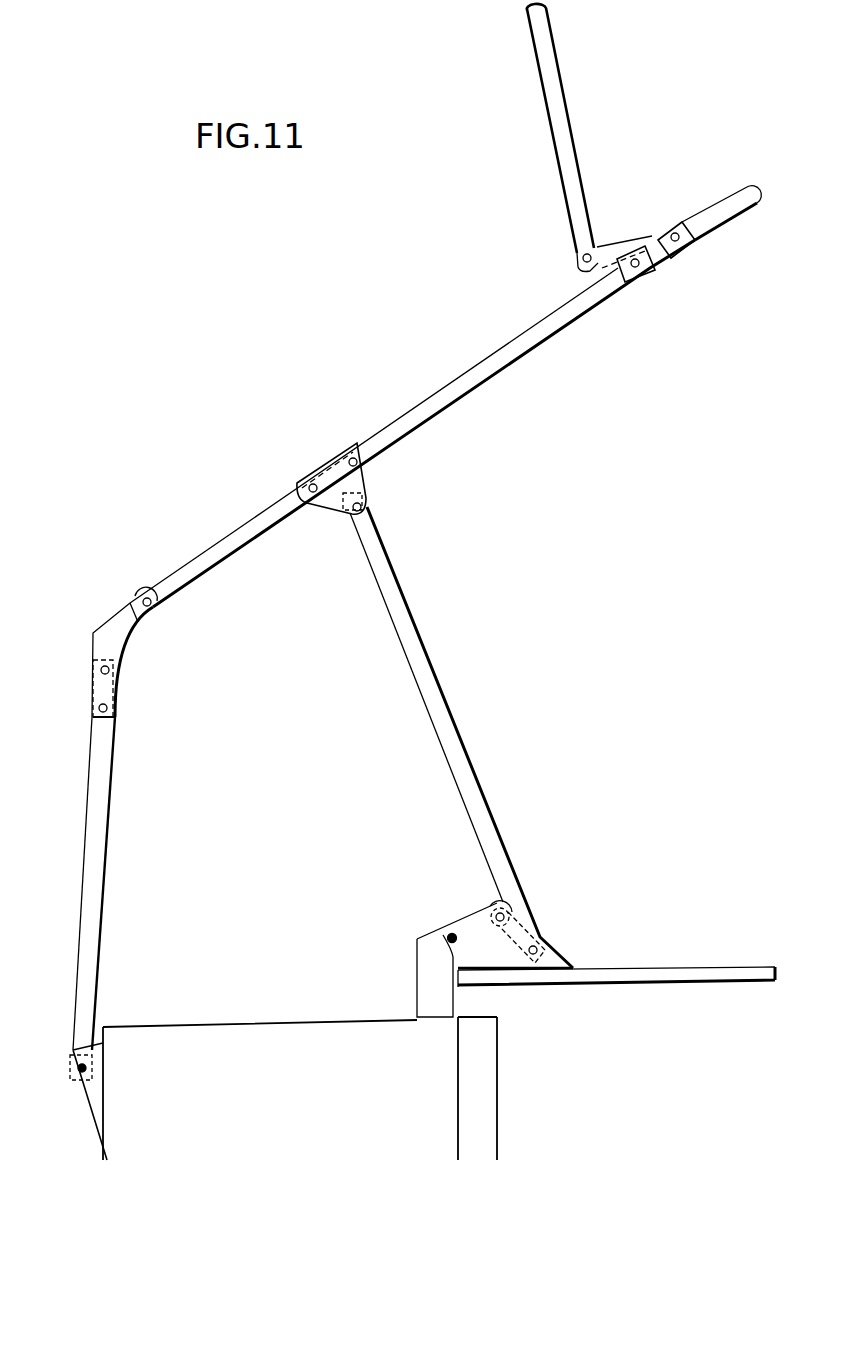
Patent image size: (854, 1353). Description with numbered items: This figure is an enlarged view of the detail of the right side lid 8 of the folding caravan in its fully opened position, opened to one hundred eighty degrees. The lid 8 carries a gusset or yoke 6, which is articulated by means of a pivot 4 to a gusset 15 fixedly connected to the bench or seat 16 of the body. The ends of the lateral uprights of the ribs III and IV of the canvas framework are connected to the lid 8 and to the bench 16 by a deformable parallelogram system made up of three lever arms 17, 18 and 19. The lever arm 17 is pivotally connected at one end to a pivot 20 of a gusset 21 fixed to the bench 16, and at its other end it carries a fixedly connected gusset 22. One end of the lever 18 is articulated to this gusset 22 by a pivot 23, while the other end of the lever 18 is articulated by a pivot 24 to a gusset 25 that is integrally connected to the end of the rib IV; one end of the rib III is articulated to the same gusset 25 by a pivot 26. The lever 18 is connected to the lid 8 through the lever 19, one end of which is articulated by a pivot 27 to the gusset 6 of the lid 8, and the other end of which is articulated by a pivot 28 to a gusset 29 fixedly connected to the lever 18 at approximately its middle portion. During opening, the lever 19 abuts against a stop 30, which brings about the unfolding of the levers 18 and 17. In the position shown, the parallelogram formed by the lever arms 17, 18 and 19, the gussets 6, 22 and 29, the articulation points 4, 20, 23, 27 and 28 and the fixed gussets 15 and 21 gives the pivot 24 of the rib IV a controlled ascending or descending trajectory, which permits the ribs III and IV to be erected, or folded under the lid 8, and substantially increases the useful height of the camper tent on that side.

The rib III is at (555, 83).
The rib IV is at (748, 190).
The pivot 4 is at (448, 935).
The gusset 6 is at (470, 920).
The lid 8 is at (733, 972).
The gusset 15 is at (430, 993).
The bench 16 is at (240, 1040).
The lever arm 17 is at (100, 818).
The lever 18 is at (485, 370).
The lever 19 is at (438, 708).
The pivot 20 is at (75, 1055).
The gusset 21 is at (95, 1095).
The gusset 22 is at (125, 648).
The pivot 23 is at (148, 596).
The pivot 24 is at (635, 275).
The gusset 25 is at (608, 240).
The pivot 26 is at (577, 263).
The pivot 27 is at (548, 945).
The pivot 28 is at (370, 506).
The gusset 29 is at (320, 470).
The stop 30 is at (505, 905).